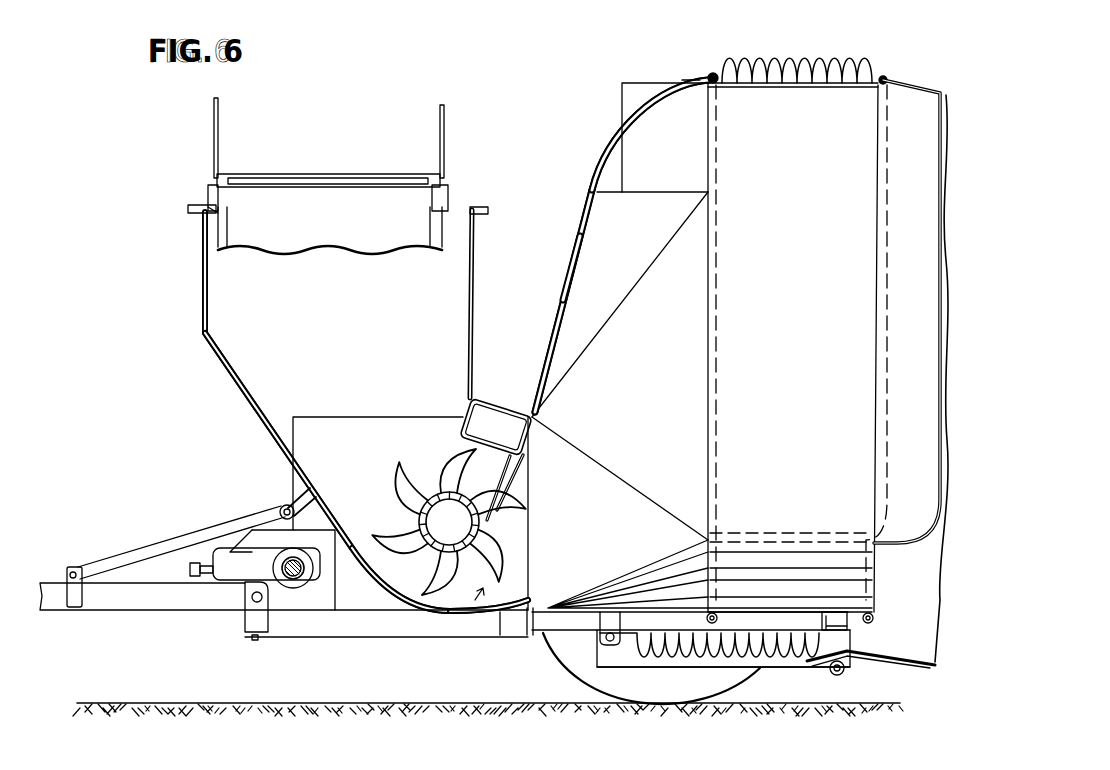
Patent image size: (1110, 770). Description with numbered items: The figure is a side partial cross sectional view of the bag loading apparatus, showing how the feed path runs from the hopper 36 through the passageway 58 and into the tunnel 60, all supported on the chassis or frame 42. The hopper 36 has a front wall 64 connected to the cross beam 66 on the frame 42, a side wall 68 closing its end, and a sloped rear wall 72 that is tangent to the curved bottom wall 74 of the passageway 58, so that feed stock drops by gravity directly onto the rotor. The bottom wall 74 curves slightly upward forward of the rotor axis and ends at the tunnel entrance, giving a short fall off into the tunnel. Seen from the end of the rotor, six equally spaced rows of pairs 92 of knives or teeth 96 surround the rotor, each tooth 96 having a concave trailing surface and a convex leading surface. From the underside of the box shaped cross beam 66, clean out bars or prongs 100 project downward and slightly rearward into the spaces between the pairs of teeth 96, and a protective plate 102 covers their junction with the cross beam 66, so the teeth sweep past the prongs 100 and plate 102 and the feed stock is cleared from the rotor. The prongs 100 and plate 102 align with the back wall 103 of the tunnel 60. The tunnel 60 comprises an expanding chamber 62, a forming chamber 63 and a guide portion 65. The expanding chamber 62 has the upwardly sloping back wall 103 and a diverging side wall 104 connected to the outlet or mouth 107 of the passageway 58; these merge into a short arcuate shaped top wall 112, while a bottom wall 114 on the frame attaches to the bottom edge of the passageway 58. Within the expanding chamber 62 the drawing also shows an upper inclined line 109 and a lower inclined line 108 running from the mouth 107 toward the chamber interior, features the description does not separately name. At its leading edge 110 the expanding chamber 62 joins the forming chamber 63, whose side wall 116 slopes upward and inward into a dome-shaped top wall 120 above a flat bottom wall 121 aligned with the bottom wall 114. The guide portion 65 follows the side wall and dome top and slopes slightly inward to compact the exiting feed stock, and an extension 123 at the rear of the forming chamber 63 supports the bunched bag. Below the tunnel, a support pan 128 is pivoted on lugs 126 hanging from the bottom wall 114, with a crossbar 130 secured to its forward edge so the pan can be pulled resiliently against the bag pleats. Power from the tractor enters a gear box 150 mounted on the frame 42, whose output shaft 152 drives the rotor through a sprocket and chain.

The hopper 36 is at (222, 378).
The rear wall 72 is at (250, 410).
The side wall 68 is at (337, 305).
The front wall 64 is at (475, 310).
The cross beam 66 is at (498, 402).
The clean out bars or prongs 100 is at (508, 480).
The protective plate 102 is at (528, 455).
The pairs of knives or teeth 92 is at (458, 462).
The knives or teeth 96 is at (394, 483).
The outlet or mouth 107 is at (528, 540).
The curved bottom wall 74 is at (397, 603).
The passageway 58 is at (490, 607).
The deflector plate 109 is at (625, 298).
The lower deflector plate 108 is at (658, 500).
The side wall 104 is at (667, 379).
The leading edge 110 is at (710, 398).
The tunnel 60 is at (600, 155).
The expanding chamber 62 is at (605, 217).
The back wall 103 is at (577, 248).
The arcuate shaped top wall 112 is at (647, 113).
The extension 123 is at (640, 82).
The dome-shaped top wall 120 is at (763, 102).
The forming chamber 63 is at (805, 107).
The guide portion 65 is at (916, 100).
The lugs 126 is at (603, 622).
The bottom wall 114 is at (657, 612).
The side wall 116 is at (783, 664).
The support pan 128 is at (763, 670).
The crossbar 130 is at (845, 675).
The flat bottom wall 121 is at (803, 612).
The chassis or frame 42 is at (308, 623).
The gear box 150 is at (322, 597).
The output shaft 152 is at (289, 579).